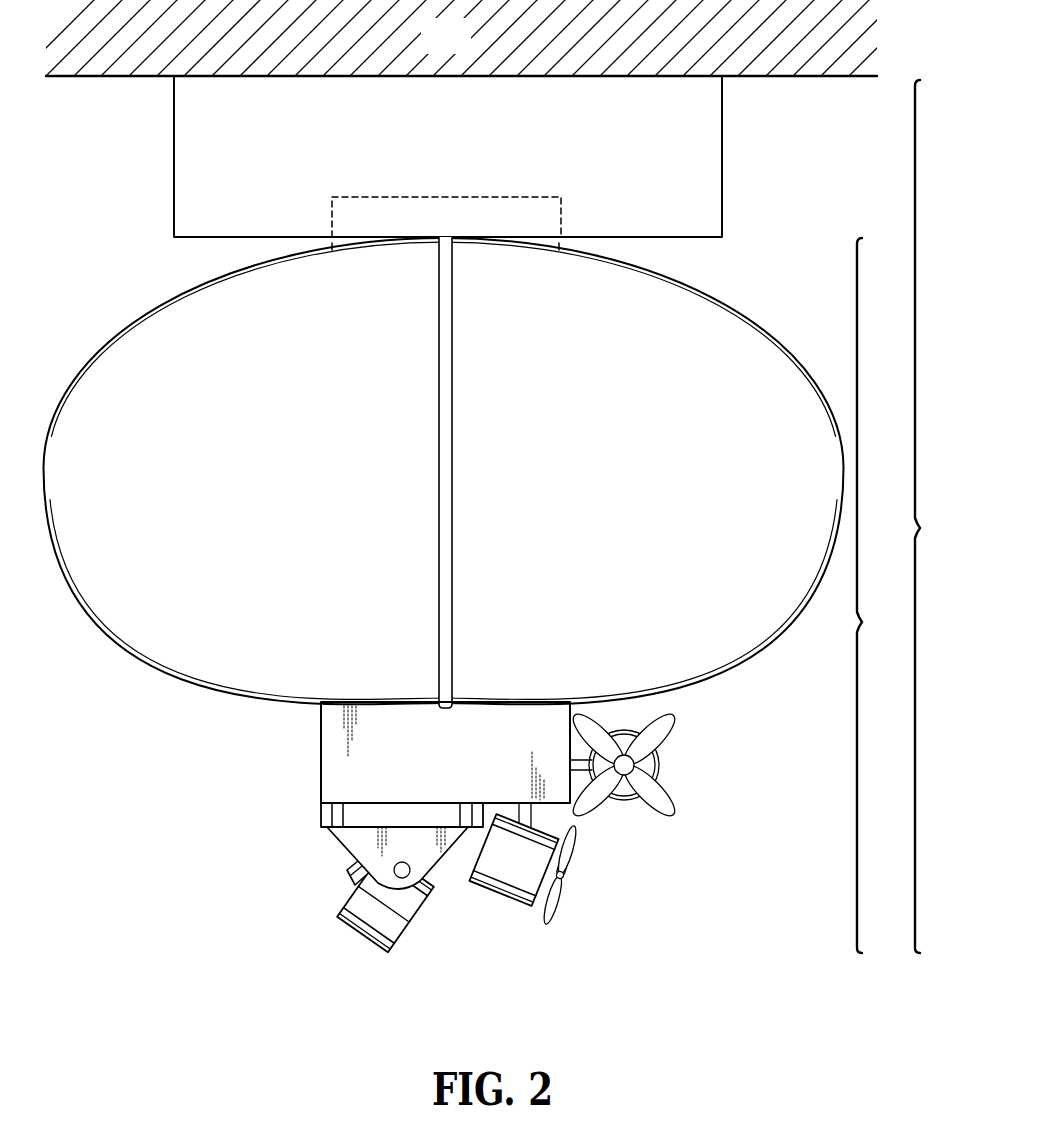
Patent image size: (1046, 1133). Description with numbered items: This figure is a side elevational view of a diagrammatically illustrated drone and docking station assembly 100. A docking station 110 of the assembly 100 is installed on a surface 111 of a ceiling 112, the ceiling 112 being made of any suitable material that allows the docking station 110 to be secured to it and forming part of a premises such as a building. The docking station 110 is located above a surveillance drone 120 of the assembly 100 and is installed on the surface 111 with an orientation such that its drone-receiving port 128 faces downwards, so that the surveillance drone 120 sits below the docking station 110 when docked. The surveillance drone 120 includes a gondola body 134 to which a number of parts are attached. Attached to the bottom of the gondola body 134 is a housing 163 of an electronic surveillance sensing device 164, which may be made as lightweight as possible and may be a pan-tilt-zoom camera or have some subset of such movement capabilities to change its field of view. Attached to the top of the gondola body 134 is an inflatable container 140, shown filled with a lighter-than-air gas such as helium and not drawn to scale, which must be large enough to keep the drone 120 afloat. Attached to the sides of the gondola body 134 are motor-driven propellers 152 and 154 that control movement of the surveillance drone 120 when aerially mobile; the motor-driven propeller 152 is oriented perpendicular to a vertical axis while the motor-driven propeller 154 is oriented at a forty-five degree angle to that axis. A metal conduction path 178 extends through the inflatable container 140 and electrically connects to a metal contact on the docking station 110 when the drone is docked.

The drone and docking station assembly 100 is at (937, 516).
The docking station 110 is at (463, 121).
The surface 111 is at (140, 78).
The ceiling 112 is at (463, 48).
The surveillance drone 120 is at (879, 595).
The drone-receiving port 128 is at (464, 229).
The gondola body 134 is at (320, 749).
The inflatable container 140 is at (653, 481).
The motor-driven propeller 152 is at (665, 800).
The motor-driven propeller 154 is at (553, 909).
The housing 163 is at (347, 863).
The electronic surveillance sensing device 164 is at (316, 910).
The metal conduction path 178 is at (446, 586).